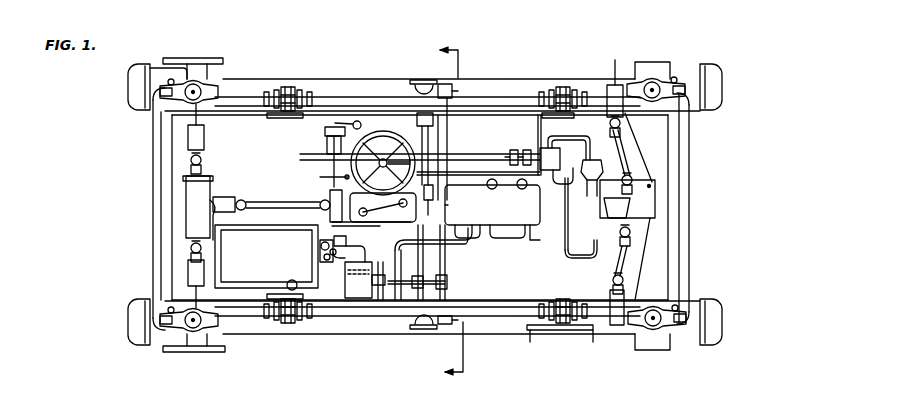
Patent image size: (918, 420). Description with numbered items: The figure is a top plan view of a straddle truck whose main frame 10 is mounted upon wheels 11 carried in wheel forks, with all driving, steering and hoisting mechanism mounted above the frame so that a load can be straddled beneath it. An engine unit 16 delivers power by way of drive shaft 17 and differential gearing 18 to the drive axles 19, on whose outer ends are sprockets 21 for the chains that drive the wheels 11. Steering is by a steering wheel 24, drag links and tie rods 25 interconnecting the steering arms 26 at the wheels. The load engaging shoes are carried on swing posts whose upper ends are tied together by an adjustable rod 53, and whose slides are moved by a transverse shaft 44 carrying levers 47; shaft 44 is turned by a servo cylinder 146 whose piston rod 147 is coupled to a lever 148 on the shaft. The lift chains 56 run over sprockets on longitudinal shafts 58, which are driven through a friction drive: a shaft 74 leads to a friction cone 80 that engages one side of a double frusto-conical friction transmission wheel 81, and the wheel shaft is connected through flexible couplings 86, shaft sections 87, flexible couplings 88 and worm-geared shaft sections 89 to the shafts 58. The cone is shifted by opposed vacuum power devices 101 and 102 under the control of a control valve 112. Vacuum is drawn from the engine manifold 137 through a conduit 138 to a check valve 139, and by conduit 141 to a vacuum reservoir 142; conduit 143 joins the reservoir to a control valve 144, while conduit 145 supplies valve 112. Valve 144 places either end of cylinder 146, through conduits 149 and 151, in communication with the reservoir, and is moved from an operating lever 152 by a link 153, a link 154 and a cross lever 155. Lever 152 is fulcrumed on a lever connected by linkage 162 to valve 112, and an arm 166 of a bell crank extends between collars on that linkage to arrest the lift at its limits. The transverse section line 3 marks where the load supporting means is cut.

The section line 3— 3 is at (451, 213).
The main frame 10 is at (357, 79).
The wheels 11 is at (720, 76).
The hydraulic pump unit 16 is at (482, 202).
The drive shaft 17 is at (259, 200).
The differential gearing 18 is at (190, 206).
The drive axles 19 is at (190, 138).
The sprockets 21 is at (190, 60).
The steering wheel 24 is at (373, 133).
The tie rods 25 is at (683, 163).
The steering arms 26 is at (668, 80).
The shaft 44 is at (433, 78).
The levers 47 is at (455, 90).
The rod 53 is at (416, 133).
The lift chains 56 is at (288, 86).
The shafts 58 is at (301, 90).
The hydraulic line 74 is at (565, 250).
The friction cone 80 is at (602, 170).
The friction transmission wheel 81 is at (660, 199).
The flexible couplings 86 is at (628, 238).
The shaft sections 87 is at (627, 262).
The flexible couplings 88 is at (628, 286).
The shaft sections 89 is at (608, 296).
The vacuum power device 101 is at (586, 255).
The vacuum power device 102 is at (596, 75).
The control valve 112 is at (548, 147).
The engine manifold 137 is at (508, 247).
The conduit 138 is at (462, 245).
The check valve 139 is at (402, 300).
The conduit 141 is at (378, 300).
The vacuum reservoir 142 is at (266, 257).
The conduit 143 is at (320, 247).
The control valve 144 is at (320, 257).
The conduit 145 is at (448, 204).
The cylinder 146 is at (358, 299).
The piston rod 147 is at (440, 280).
The lever 148 is at (447, 287).
The conduit 149 is at (340, 253).
The conduit 151 is at (372, 268).
The operating lever 152 is at (355, 121).
The link 153 is at (330, 196).
The link 154 is at (328, 163).
The cross lever 155 is at (328, 176).
The linkage 162 is at (455, 157).
The arm of bell crank 166 is at (513, 150).